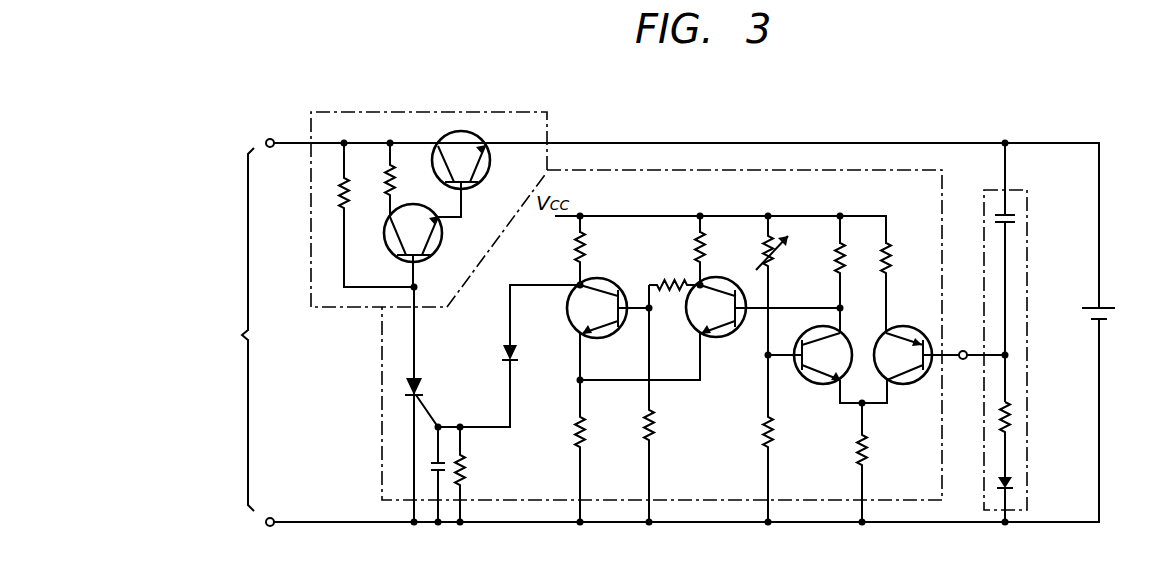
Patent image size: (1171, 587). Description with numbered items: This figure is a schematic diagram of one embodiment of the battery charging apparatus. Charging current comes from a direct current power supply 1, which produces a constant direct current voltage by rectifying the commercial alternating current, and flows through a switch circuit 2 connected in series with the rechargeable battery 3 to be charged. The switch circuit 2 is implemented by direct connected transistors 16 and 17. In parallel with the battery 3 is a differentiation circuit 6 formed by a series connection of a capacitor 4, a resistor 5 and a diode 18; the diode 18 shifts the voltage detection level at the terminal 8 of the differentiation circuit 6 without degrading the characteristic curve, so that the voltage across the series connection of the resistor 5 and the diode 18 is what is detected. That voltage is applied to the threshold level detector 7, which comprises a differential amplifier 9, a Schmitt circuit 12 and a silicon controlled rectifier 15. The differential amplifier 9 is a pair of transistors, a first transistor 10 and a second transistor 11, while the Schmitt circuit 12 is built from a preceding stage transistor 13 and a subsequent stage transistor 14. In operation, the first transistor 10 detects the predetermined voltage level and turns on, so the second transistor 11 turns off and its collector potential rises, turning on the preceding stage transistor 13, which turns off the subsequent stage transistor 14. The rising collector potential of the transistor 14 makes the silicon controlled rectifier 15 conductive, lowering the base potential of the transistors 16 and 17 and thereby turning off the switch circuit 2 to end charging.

The direct current power supply 1 is at (188, 329).
The switch circuit 2 is at (372, 112).
The rechargeable battery 3 is at (1105, 320).
The capacitor 4 is at (1020, 218).
The resistor 5 is at (1014, 424).
The differentiation circuit 6 is at (1028, 256).
The threshold level detector 7 is at (552, 502).
The terminal 8 is at (963, 363).
The differential amplifier 9 is at (870, 310).
The first transistor 10 is at (905, 383).
The second transistor 11 is at (820, 385).
The Schmitt circuit 12 is at (650, 259).
The preceding stage transistor 13 is at (716, 338).
The subsequent stage transistor 14 is at (577, 323).
The silicon controlled rectifier 15 is at (420, 392).
The transistor 16 is at (388, 230).
The transistor 17 is at (476, 131).
The diode 18 is at (1014, 483).